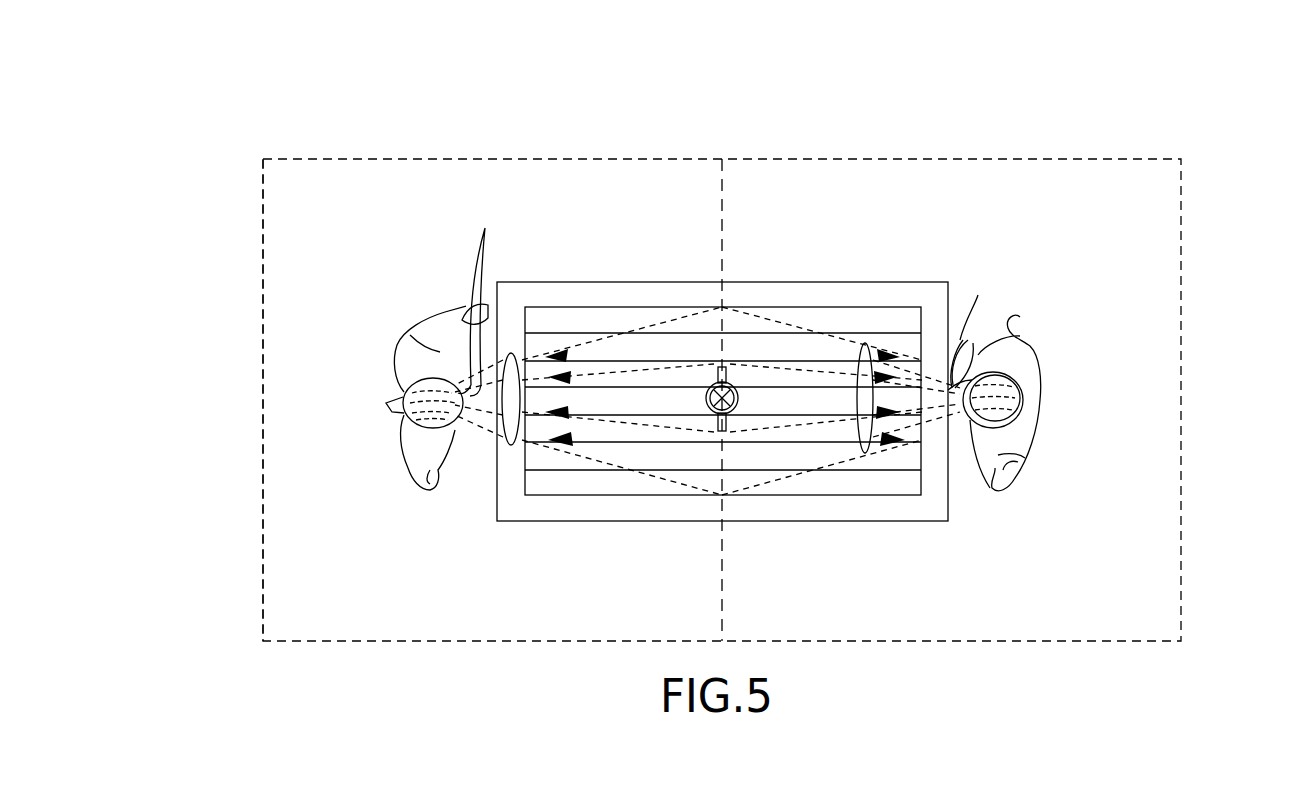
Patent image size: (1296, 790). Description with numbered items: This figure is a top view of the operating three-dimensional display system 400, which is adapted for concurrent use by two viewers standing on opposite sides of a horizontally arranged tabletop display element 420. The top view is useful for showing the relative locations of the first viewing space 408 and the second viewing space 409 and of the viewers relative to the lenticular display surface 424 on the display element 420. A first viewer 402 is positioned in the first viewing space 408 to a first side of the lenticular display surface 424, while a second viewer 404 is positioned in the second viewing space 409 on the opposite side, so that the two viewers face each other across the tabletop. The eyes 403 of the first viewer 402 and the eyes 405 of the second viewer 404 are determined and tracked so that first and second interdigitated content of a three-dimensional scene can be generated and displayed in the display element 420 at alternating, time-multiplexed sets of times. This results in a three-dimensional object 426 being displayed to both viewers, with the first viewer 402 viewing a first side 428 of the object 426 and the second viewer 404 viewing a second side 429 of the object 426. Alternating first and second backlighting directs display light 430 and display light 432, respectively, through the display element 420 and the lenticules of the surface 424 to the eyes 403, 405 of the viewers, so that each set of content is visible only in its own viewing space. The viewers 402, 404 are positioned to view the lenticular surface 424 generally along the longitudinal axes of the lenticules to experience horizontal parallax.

The 3D display system 400 is at (196, 118).
The first viewer 402 is at (1040, 345).
The eyes of first viewer 403 is at (958, 385).
The second viewer 404 is at (395, 385).
The eyes of second viewer 405 is at (489, 300).
The first viewing space 408 is at (1181, 192).
The second viewing space 409 is at (262, 292).
The 3D tabletop display element 420 is at (828, 521).
The lenticular display surface 424 is at (905, 497).
The 3D object 426 is at (750, 365).
The first side of 3D object 428 is at (738, 398).
The second side of 3D object 429 is at (706, 399).
The first display light 430 is at (865, 343).
The second display light 432 is at (505, 447).